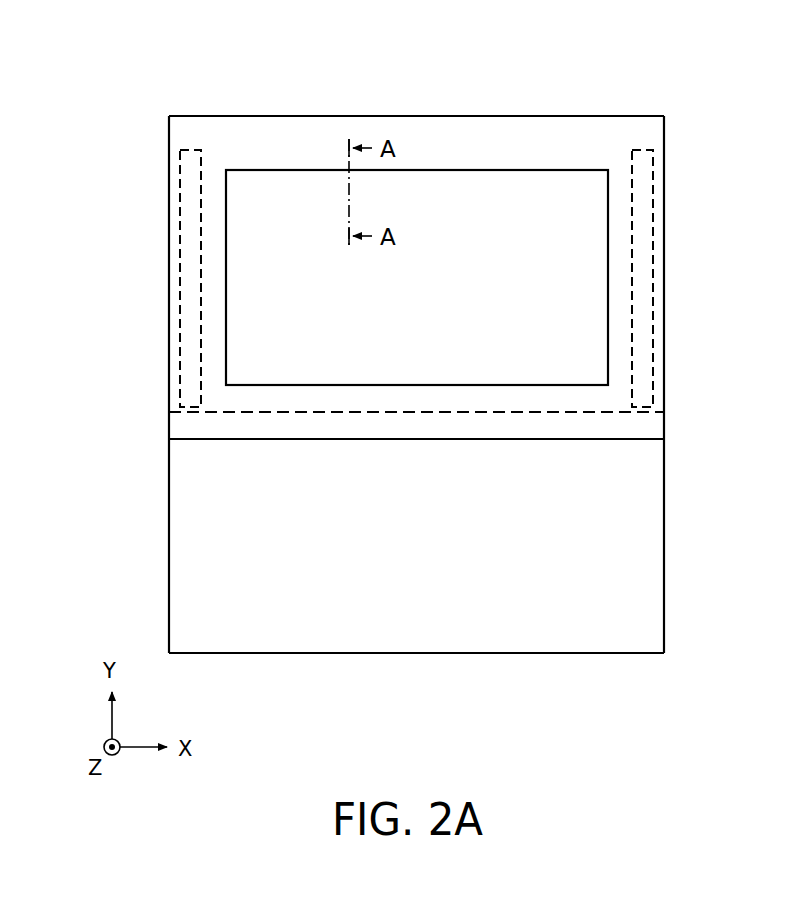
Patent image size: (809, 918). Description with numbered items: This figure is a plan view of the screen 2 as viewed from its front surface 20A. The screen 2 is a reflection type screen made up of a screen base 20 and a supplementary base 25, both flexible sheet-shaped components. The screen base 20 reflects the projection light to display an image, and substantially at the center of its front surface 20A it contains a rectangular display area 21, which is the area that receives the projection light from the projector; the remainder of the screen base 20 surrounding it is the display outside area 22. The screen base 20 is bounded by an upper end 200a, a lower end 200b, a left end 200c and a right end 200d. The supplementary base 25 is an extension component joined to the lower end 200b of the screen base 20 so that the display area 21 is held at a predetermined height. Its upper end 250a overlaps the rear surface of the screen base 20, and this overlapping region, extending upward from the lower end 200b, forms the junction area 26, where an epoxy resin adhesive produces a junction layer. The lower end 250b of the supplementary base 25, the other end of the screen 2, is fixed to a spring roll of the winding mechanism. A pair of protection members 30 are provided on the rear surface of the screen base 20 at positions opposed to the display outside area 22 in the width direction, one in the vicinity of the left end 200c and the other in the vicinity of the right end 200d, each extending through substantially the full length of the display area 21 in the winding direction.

The screen 2 is at (726, 50).
The screen base 20 is at (582, 128).
The front surface 20A is at (449, 142).
The display area 21 is at (527, 170).
The display outside area 22 is at (210, 180).
The junction area 26 is at (428, 427).
The upper end 200a is at (643, 126).
The lower end 200b is at (593, 428).
The left end 200c is at (190, 300).
The right end 200d is at (645, 298).
The protection members 30 is at (203, 160).
The supplementary base 25 is at (645, 492).
The upper end 250a is at (645, 428).
The lower end 250b is at (645, 643).